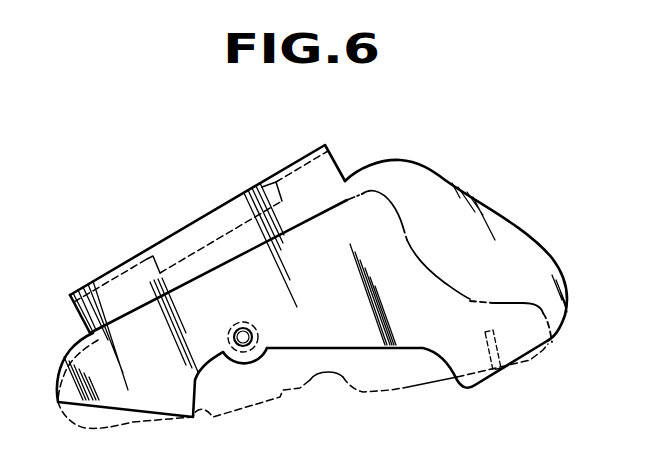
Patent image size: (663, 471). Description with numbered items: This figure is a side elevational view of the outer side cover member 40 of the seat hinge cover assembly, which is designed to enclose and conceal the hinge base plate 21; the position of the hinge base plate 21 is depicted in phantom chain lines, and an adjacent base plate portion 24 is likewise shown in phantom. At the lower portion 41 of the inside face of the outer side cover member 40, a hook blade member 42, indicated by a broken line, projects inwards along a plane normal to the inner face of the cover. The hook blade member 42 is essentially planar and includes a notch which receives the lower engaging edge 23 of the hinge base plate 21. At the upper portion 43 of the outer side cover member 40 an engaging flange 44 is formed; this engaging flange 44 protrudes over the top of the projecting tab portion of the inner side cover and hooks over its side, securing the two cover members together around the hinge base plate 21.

The outer side cover member 40 is at (512, 208).
The lower portion 41 is at (307, 347).
The plate 24 is at (120, 328).
The upper portion 43 is at (78, 319).
The engaging flange 44 is at (224, 239).
The hinge base plate 21 is at (479, 292).
The lower engaging edge 23 is at (403, 388).
The hook blade member 42 is at (500, 363).